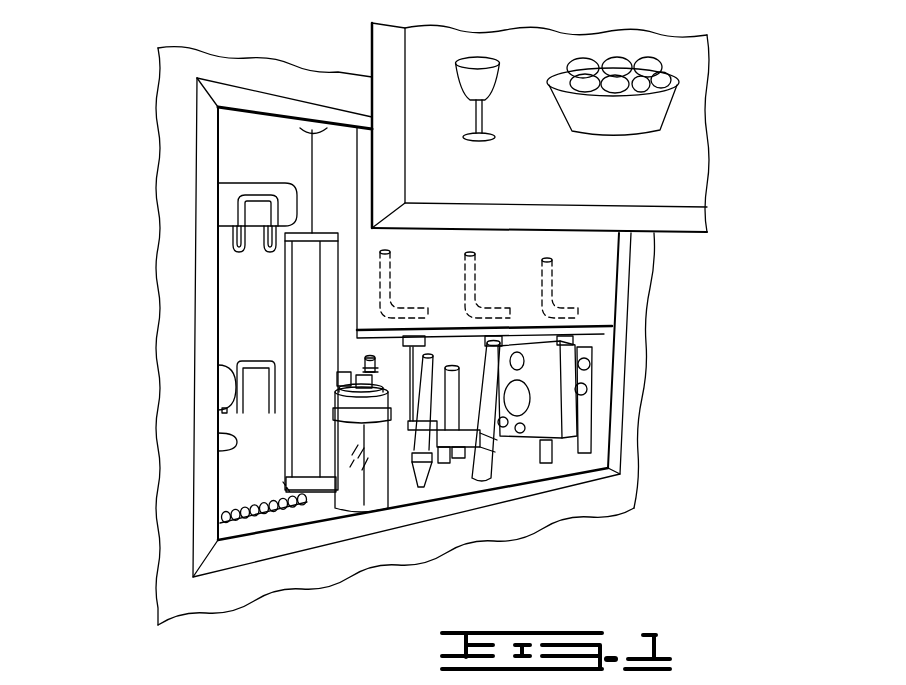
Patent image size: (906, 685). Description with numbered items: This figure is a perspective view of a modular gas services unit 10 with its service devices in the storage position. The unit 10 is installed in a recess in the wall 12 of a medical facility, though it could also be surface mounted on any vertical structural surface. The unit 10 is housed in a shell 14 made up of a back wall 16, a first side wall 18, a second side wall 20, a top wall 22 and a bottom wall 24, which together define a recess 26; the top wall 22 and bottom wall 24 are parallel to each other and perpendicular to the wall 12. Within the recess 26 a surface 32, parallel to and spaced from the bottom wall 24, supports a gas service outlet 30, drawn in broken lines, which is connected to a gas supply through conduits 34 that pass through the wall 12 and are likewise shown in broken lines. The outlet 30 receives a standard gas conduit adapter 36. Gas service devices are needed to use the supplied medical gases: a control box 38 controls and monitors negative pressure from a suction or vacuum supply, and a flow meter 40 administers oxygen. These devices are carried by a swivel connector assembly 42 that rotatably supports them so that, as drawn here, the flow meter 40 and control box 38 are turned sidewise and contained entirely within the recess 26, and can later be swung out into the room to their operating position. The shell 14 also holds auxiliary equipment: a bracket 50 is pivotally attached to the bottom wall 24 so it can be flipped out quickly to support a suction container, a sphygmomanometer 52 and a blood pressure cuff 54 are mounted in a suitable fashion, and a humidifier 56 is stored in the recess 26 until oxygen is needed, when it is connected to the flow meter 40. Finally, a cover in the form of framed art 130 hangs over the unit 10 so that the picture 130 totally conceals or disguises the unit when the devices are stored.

The modular gas services unit 10 is at (631, 401).
The wall 12 is at (640, 273).
The shell 14 is at (186, 265).
The back wall 16 is at (237, 135).
The first side wall 18 is at (234, 438).
The second side wall 20 is at (593, 383).
The top wall 22 is at (337, 126).
The bottom wall 24 is at (320, 509).
The recess 26 is at (229, 484).
The gas service outlet 30 is at (583, 322).
The surface 32 is at (592, 350).
The conduits 34 is at (547, 285).
The gas conduit adapter 36 is at (340, 342).
The control box 38 is at (560, 440).
The flow meter 40 is at (478, 455).
The swivel connector assembly 42 is at (507, 461).
The bracket 50 is at (565, 448).
The sphygmomanometer 52 is at (287, 322).
The blood pressure cuff 54 is at (233, 205).
The humidifier 56 is at (372, 477).
The framed art 130 is at (687, 138).